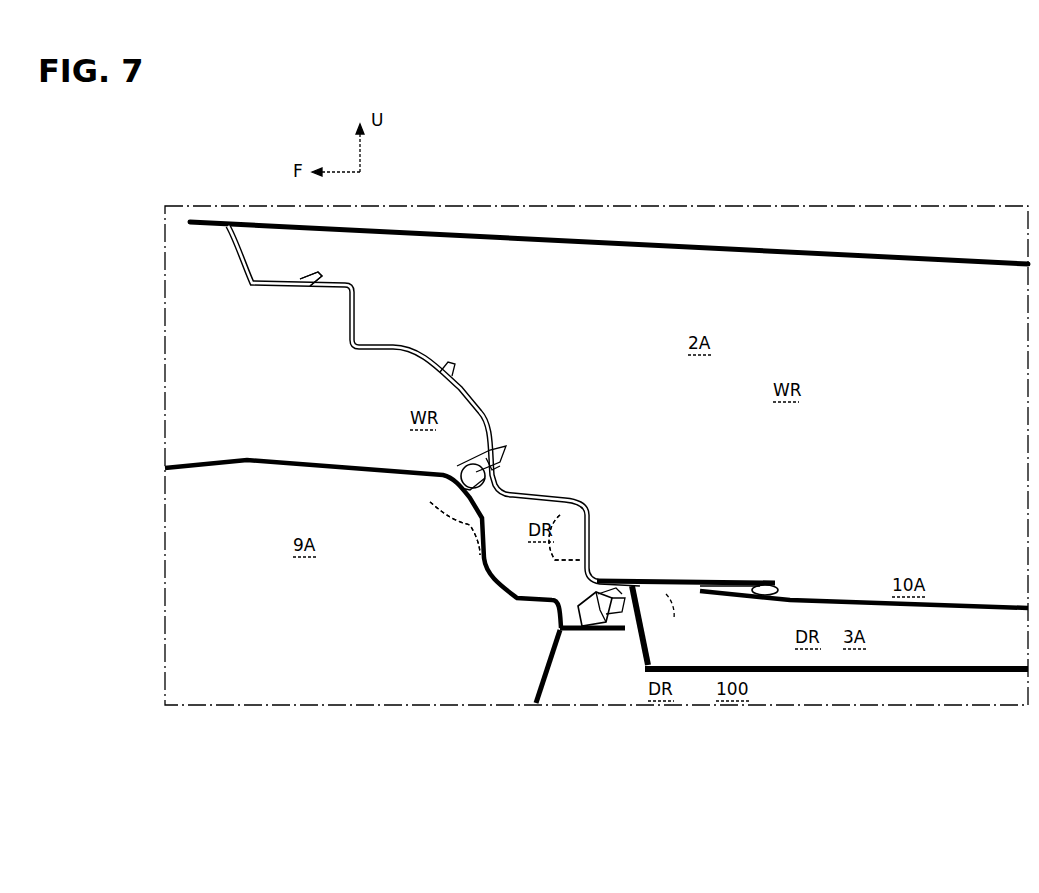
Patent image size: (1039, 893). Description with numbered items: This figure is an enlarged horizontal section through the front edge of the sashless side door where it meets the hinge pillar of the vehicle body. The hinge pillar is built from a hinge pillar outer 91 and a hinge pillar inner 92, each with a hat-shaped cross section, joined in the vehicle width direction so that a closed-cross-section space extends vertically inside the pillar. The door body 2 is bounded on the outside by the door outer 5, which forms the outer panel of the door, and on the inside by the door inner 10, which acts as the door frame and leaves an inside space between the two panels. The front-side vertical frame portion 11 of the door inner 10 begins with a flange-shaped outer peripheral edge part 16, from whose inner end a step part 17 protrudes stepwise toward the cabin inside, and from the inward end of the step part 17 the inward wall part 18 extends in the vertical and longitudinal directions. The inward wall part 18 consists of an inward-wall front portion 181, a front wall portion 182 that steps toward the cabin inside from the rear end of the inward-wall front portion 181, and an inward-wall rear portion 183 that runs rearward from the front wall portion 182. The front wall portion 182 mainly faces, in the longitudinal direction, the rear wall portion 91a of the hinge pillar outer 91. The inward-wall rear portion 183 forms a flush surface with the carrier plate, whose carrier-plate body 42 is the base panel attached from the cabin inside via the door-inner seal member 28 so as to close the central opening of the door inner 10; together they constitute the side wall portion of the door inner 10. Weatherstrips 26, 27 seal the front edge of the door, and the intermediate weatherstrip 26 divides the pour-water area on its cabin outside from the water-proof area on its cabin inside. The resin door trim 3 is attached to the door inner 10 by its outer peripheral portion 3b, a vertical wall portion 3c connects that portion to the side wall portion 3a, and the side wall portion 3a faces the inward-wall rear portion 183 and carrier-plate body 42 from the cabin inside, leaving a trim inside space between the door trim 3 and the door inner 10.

The door body 2 is at (720, 188).
The door outer 5 is at (421, 222).
The front-side vertical frame portion 11 is at (408, 370).
The outer peripheral edge part 16 is at (299, 292).
The step part 17 is at (348, 338).
The hinge pillar outer 91 is at (276, 460).
The rear wall portion 91a is at (488, 556).
The intermediate weatherstrip 26 is at (480, 506).
The weatherstrip 27 is at (580, 606).
The door-inner seal member 28 is at (768, 586).
The inward wall part 18 is at (552, 560).
The inward-wall front portion 181 is at (472, 556).
The front wall portion 182 is at (580, 540).
The inward-wall rear portion 183 is at (660, 596).
The door trim 3 is at (812, 644).
The side wall portion 3a is at (700, 674).
The outer peripheral portion 3b is at (612, 580).
The vertical wall portion 3c is at (646, 632).
The hinge pillar inner 92 is at (554, 667).
The carrier-plate body 42 is at (872, 606).
The door inner 10 is at (978, 611).